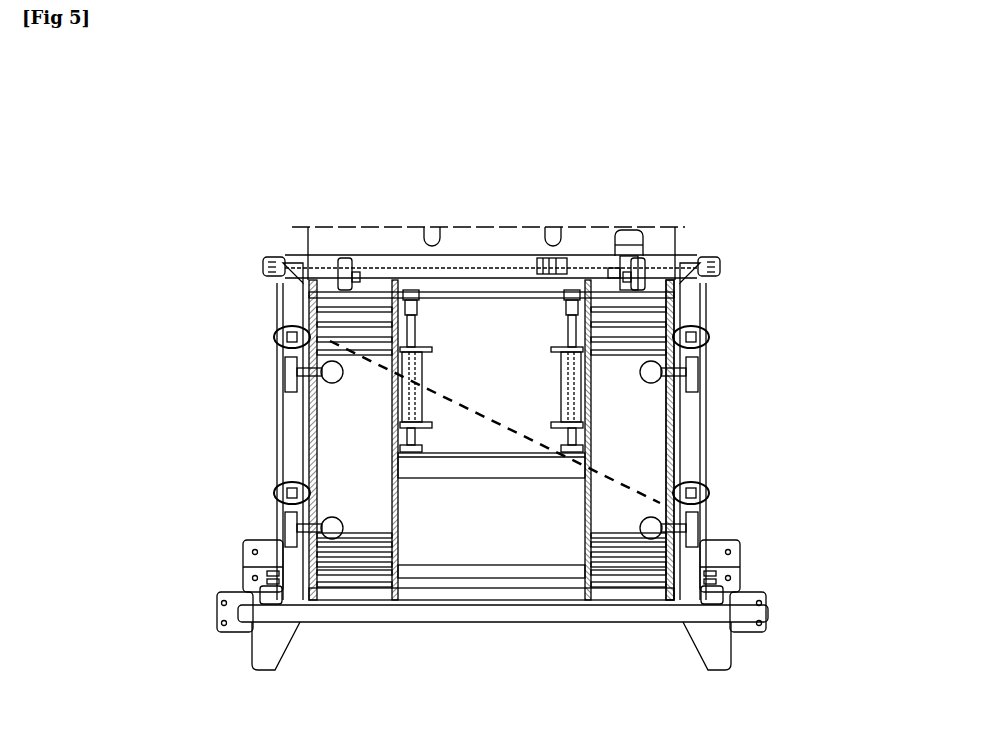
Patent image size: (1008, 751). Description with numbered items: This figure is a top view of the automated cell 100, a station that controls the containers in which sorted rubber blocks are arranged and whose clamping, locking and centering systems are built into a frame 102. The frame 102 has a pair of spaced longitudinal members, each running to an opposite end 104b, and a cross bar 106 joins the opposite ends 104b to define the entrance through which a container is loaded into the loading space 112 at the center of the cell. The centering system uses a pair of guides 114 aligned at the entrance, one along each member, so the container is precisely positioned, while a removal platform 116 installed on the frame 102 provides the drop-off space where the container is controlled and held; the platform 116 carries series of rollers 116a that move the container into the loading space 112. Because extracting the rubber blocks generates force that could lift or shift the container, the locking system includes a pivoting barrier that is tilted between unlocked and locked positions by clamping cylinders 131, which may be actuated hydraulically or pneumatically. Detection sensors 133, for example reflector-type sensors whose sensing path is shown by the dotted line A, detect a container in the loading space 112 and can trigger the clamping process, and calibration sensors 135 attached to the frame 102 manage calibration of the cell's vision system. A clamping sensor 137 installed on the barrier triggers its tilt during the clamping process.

The automated cell 100 is at (667, 203).
The frame 102 is at (292, 567).
The opposite end 104b is at (240, 615).
The cross bar 106 is at (347, 612).
The loading space 112 is at (653, 489).
The guide 114 is at (262, 652).
The removal platform 116 is at (387, 597).
The rollers 116a is at (383, 562).
The clamping cylinder 131 is at (544, 404).
The detection sensor 133 is at (282, 337).
The calibration sensor 135 is at (292, 528).
The clamping sensor 137 is at (528, 260).
The dotted line A is at (640, 473).